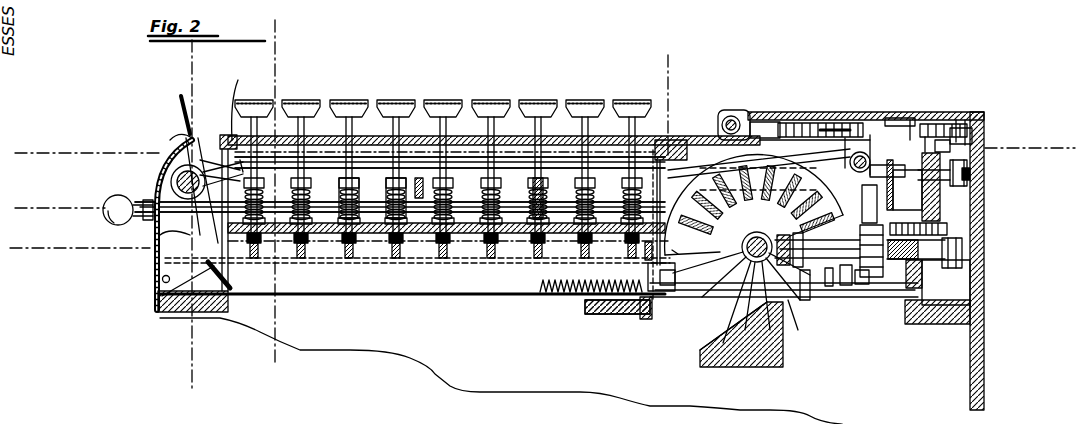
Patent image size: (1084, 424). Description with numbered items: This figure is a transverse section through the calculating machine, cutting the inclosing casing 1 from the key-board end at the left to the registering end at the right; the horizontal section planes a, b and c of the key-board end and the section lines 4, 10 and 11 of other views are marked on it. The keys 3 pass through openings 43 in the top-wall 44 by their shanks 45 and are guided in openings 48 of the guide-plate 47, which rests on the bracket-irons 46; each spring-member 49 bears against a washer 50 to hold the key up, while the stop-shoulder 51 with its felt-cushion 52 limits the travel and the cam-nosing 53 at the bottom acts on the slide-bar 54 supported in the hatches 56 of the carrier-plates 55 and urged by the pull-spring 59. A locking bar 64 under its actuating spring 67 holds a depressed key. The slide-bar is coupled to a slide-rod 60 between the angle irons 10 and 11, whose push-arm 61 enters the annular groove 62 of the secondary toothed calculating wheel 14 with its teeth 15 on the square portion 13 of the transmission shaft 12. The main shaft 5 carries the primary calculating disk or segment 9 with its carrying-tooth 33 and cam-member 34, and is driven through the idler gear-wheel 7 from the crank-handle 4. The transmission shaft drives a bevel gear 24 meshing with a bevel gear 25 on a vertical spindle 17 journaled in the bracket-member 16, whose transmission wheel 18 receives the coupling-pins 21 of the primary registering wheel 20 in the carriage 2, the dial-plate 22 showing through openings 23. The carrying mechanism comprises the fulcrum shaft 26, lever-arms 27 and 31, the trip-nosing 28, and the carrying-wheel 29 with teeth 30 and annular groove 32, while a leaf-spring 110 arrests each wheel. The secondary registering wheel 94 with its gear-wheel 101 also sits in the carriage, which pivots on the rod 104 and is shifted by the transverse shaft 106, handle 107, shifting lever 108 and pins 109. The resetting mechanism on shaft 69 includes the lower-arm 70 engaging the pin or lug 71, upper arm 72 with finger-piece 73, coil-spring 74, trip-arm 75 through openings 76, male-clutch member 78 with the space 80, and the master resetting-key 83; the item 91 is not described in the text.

The inclosing casing 1 is at (974, 298).
The movable carriage 2 is at (770, 120).
The keys 3 is at (492, 100).
The crank-handle 4 is at (871, 98).
The main shaft 5 is at (744, 246).
The idler gear-wheel 7 is at (848, 418).
The primary calculating disk or segment 9 is at (848, 160).
The angle iron 10 is at (800, 375).
The angle iron 11 is at (940, 338).
The transmission shaft 12 is at (926, 268).
The square portion 13 is at (814, 264).
The secondary toothed calculating wheel 14 is at (860, 258).
The teeth 15 is at (810, 295).
The bracket-member 16 is at (940, 200).
The vertical spindle 17 is at (940, 188).
The transmission wheel 18 is at (969, 155).
The primary registering wheel 20 is at (940, 140).
The coupling-pins 21 is at (905, 118).
The dial-plate 22 is at (930, 133).
The openings 23 is at (918, 120).
The bevel gear 24 is at (966, 262).
The bevel gear 25 is at (944, 229).
The fulcrum shaft 26 is at (868, 136).
The lever-arm 27 is at (884, 119).
The trip-nosing 28 is at (967, 122).
The carrying-wheel 29 is at (848, 280).
The teeth 30 is at (866, 280).
The lever-arm 31 is at (848, 145).
The annular groove 32 is at (898, 296).
The carrying-tooth 33 is at (672, 253).
The cam-member 34 is at (725, 320).
The openings 43 is at (345, 150).
The top-wall 44 is at (283, 126).
The key-shank 45 is at (327, 120).
The bracket-irons 46 is at (273, 84).
The guide-plate 47 is at (440, 236).
The openings 48 is at (487, 234).
The spring-member 49 is at (346, 204).
The washer 50 is at (298, 200).
The stop-shoulder 51 is at (508, 263).
The felt-cushion 52 is at (348, 258).
The cam-nosing 53 is at (443, 258).
The slide-bar 54 is at (415, 277).
The carrier-plate 55 is at (158, 303).
The openings or hatches 56 is at (232, 270).
The pull-spring 59 is at (558, 302).
The slide-rod 60 is at (916, 325).
The push-arm 61 is at (828, 295).
The annular groove 62 is at (798, 310).
The locking bar 64 is at (420, 157).
The actuating spring 67 is at (420, 178).
The shaft 69 is at (180, 163).
The lower-arm 70 is at (160, 310).
The pin or lug 71 is at (162, 294).
The upper arm 72 is at (190, 134).
The finger-piece 73 is at (187, 96).
The coil-spring 74 is at (136, 190).
The trip-arm 75 is at (202, 150).
The openings 76 is at (225, 135).
The male-clutch member 78 is at (172, 178).
The space 80 is at (152, 264).
The master resetting-key 83 is at (262, 416).
The rod 91 is at (380, 416).
The secondary registering wheel 94 is at (830, 123).
The gear-wheel 101 is at (794, 121).
The rod 104 is at (728, 114).
The transverse shaft 106 is at (162, 235).
The handle 107 is at (113, 215).
The shifting lever 108 is at (967, 170).
The pins 109 is at (967, 180).
The leaf-spring 110 is at (755, 124).
The section line a is at (86, 143).
The section line b is at (53, 199).
The section line c is at (75, 240).